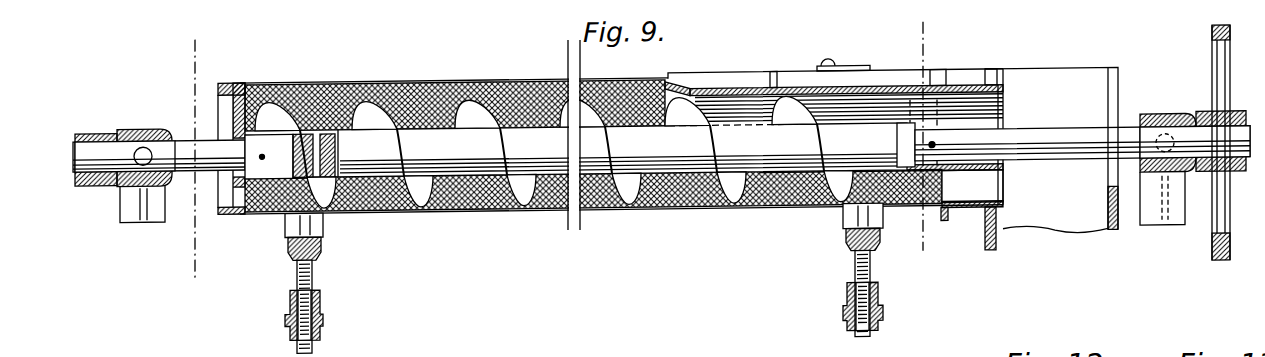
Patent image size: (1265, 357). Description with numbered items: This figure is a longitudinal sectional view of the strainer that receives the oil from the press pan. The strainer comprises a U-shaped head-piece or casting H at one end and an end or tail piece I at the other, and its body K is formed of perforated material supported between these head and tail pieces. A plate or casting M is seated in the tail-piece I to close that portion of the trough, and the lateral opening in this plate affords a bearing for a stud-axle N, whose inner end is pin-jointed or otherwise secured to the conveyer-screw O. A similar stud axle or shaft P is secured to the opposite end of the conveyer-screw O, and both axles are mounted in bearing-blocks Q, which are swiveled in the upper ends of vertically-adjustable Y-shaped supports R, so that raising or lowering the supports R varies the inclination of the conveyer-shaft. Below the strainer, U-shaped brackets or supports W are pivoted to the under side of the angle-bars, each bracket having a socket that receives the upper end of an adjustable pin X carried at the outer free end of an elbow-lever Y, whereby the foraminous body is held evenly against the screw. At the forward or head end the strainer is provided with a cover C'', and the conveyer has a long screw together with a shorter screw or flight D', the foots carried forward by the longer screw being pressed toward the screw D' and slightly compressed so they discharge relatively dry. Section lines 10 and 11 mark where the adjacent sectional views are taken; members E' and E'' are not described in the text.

The section line 10 10 is at (194, 162).
The section line 11 11 is at (922, 134).
The body of the strainer K is at (684, 219).
The plate or casting M is at (244, 86).
The end or tail piece I is at (233, 217).
The stud-axle N is at (190, 156).
The conveyer-screw O is at (580, 152).
The stud axle or shaft P is at (1083, 146).
The bearing-block Q is at (145, 132).
The Y-shaped support R is at (133, 221).
The cover C'' is at (834, 70).
The shorter screw or flight D' is at (849, 103).
The support bar E' is at (1006, 228).
The bearing frame E'' is at (1051, 153).
The head-piece or casting H is at (967, 224).
The U-shaped bracket or support W is at (322, 234).
The adjustable pin X is at (314, 281).
The elbow-lever Y is at (322, 311).